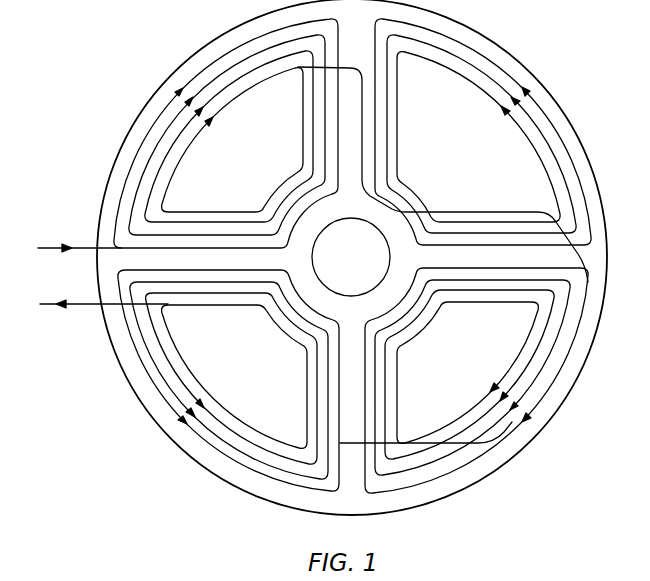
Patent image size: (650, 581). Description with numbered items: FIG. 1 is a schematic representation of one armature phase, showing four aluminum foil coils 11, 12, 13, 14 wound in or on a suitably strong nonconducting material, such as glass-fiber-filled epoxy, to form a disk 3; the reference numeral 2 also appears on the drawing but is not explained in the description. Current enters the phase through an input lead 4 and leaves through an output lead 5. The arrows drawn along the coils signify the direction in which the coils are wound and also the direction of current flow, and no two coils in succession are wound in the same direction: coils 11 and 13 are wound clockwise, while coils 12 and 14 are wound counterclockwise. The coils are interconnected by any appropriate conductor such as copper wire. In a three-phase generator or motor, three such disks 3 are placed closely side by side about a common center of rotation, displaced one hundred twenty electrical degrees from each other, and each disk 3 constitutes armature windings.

The tube coil turn 2 is at (156, 150).
The disk 3 is at (162, 436).
The input lead 4 is at (38, 248).
The output lead 5 is at (40, 304).
The coil 11 is at (288, 22).
The coil 12 is at (422, 12).
The coil 13 is at (487, 446).
The coil 14 is at (318, 497).